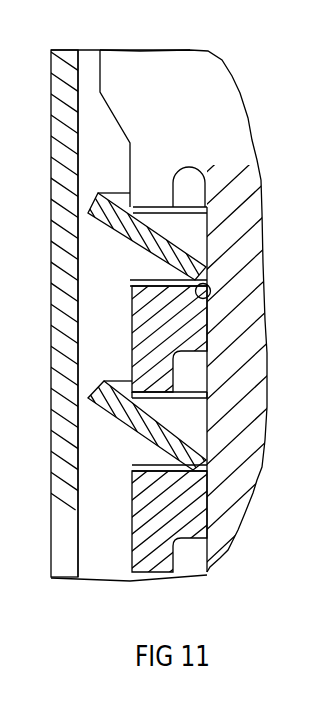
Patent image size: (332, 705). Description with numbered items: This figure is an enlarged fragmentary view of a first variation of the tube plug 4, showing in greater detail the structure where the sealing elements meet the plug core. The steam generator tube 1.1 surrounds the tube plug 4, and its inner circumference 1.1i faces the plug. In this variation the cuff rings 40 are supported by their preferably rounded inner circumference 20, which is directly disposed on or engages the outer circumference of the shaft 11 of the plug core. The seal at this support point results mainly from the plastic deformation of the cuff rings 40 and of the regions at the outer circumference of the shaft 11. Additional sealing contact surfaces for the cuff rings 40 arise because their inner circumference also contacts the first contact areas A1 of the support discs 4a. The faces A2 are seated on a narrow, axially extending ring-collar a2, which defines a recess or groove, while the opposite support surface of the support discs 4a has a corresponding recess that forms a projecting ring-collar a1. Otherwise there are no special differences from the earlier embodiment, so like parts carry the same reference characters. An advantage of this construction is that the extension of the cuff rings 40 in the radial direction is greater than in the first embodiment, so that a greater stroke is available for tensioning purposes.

The tube plug 4 is at (202, 52).
The shaft 11 is at (250, 435).
The cuff rings 40 is at (127, 236).
The support discs 4a is at (145, 328).
The ring-collar a1 is at (130, 283).
The ring-collar a2 is at (136, 216).
The first contact areas A1 is at (212, 292).
The faces A2 is at (131, 198).
The inner circumference 20 is at (208, 270).
The steam generator tube 1.1 is at (64, 481).
The inner circumference 1.1i is at (80, 548).